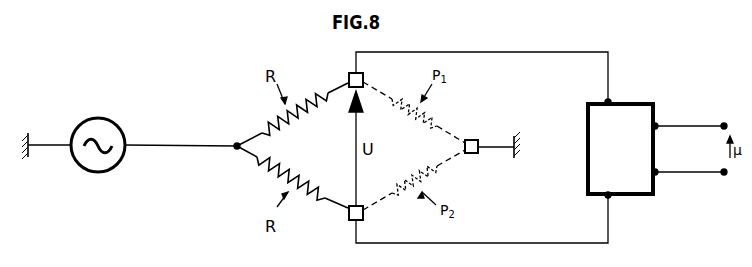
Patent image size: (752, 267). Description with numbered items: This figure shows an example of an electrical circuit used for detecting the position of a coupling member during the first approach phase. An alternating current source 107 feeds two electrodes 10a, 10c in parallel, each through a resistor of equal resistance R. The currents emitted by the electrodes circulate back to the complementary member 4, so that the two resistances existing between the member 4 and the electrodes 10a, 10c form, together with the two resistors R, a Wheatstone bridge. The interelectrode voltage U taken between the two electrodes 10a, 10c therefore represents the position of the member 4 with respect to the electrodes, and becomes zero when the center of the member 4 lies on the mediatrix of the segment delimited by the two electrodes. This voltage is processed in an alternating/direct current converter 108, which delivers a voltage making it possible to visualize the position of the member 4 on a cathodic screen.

The alternating current source 107 is at (117, 165).
The electrode 10a is at (349, 74).
The electrode 10c is at (349, 218).
The complementary member 4 is at (475, 140).
The alternating/direct current converter 108 is at (654, 100).